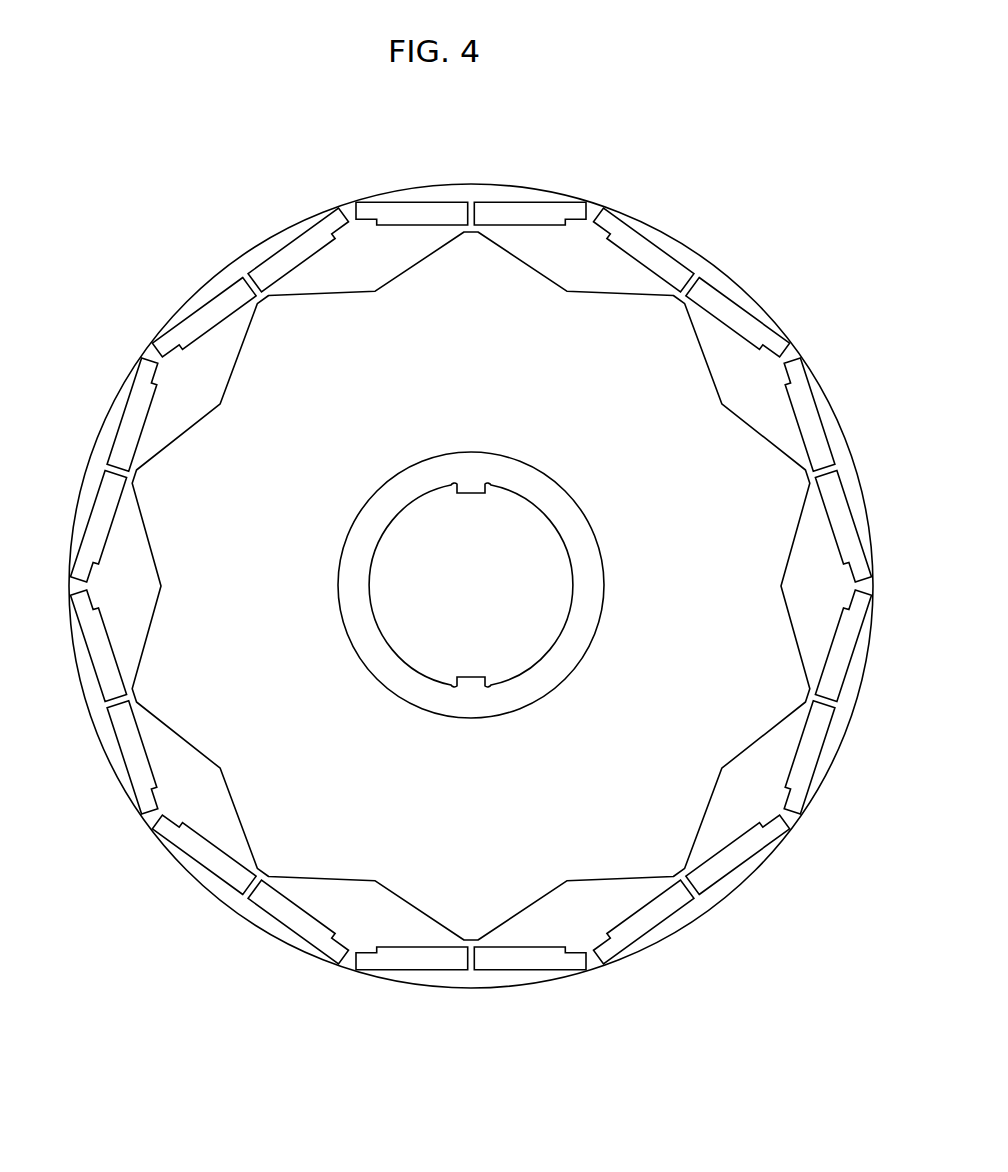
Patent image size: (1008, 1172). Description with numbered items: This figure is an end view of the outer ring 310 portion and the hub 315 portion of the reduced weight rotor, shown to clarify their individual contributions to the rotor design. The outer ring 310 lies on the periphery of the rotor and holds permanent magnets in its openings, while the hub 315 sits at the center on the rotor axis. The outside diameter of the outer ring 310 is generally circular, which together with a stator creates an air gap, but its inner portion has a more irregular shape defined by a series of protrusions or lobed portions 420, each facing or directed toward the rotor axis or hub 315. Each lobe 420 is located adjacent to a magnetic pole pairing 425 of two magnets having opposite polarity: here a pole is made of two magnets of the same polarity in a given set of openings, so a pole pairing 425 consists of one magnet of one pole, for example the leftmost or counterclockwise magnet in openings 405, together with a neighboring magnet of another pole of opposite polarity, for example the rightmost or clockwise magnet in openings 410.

The outer ring 310 is at (782, 300).
The hub 315 is at (521, 655).
The openings 405 is at (541, 150).
The openings 410 is at (180, 296).
The lobed portions 420 is at (708, 392).
The pole pairing 425 is at (337, 240).